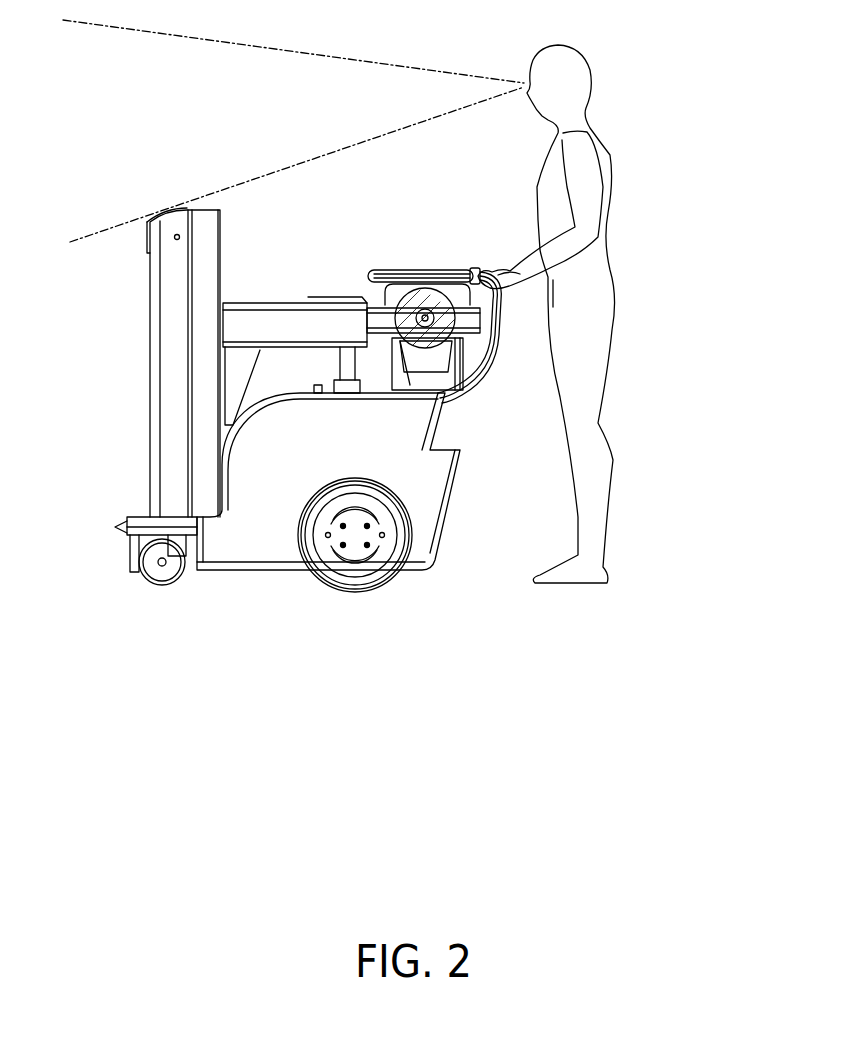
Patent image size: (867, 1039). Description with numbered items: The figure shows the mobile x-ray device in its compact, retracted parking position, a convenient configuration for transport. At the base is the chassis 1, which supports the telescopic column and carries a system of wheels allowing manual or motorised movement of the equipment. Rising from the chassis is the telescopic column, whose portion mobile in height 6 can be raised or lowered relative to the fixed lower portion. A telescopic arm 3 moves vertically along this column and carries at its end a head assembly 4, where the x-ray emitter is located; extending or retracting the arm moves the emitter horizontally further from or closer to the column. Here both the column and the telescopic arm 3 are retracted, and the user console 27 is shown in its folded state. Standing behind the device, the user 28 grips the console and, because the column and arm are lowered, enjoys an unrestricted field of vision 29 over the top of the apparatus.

The chassis 1 is at (260, 433).
The telescopic arm 3 is at (270, 272).
The head assembly 4 is at (463, 298).
The portion mobile in height 6 is at (100, 418).
The user console 27 is at (419, 255).
The user 28 is at (582, 298).
The field of vision 29 is at (293, 131).